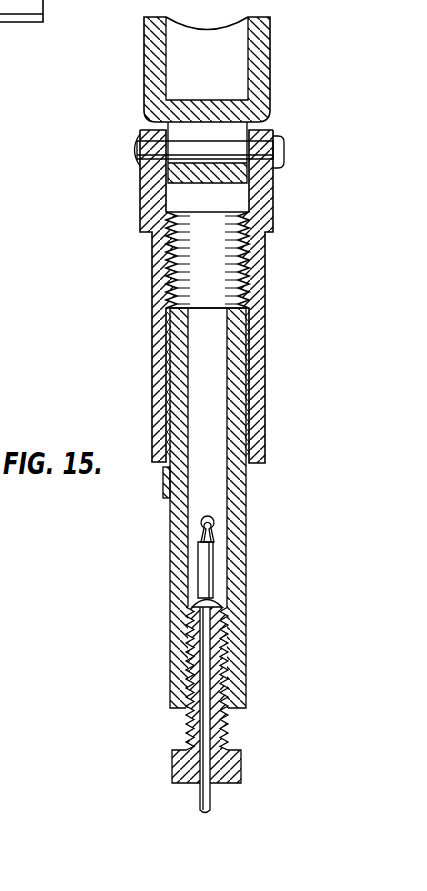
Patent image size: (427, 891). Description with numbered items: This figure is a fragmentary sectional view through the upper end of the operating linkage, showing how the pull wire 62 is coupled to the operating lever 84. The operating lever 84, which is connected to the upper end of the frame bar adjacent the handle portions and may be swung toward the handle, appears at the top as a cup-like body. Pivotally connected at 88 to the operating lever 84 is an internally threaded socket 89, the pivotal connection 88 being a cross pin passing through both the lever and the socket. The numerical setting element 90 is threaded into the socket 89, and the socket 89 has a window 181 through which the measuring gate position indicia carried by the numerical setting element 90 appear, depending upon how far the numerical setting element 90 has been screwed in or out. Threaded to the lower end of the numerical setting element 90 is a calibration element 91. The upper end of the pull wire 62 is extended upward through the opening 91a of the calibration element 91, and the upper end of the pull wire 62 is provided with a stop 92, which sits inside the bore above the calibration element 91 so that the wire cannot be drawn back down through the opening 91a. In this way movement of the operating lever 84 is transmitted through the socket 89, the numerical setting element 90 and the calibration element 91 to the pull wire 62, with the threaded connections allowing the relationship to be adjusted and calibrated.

The operating lever 84 is at (262, 89).
The pivotal connection 88 is at (267, 152).
The internally threaded socket 89 is at (265, 315).
The numerical setting element 90 is at (237, 392).
The window 181 is at (160, 483).
The calibration element 91 is at (227, 648).
The stop 92 is at (212, 598).
The opening of the calibration element 91a is at (210, 725).
The pull wire 62 is at (210, 800).